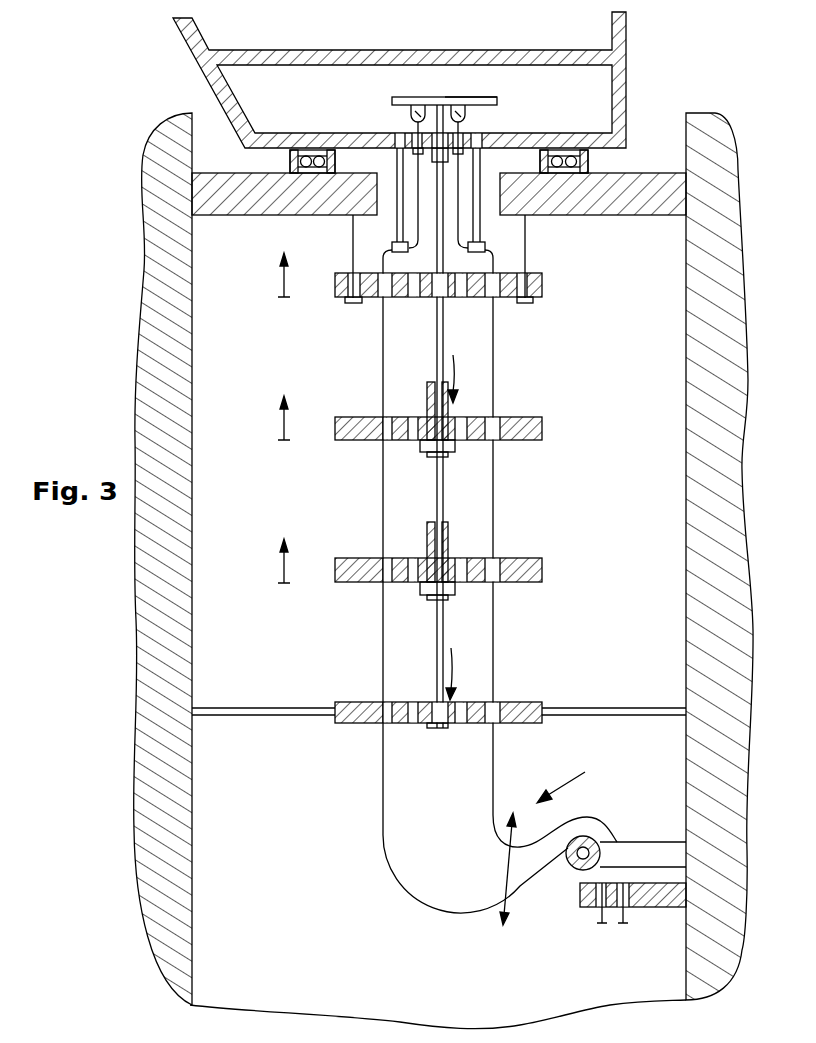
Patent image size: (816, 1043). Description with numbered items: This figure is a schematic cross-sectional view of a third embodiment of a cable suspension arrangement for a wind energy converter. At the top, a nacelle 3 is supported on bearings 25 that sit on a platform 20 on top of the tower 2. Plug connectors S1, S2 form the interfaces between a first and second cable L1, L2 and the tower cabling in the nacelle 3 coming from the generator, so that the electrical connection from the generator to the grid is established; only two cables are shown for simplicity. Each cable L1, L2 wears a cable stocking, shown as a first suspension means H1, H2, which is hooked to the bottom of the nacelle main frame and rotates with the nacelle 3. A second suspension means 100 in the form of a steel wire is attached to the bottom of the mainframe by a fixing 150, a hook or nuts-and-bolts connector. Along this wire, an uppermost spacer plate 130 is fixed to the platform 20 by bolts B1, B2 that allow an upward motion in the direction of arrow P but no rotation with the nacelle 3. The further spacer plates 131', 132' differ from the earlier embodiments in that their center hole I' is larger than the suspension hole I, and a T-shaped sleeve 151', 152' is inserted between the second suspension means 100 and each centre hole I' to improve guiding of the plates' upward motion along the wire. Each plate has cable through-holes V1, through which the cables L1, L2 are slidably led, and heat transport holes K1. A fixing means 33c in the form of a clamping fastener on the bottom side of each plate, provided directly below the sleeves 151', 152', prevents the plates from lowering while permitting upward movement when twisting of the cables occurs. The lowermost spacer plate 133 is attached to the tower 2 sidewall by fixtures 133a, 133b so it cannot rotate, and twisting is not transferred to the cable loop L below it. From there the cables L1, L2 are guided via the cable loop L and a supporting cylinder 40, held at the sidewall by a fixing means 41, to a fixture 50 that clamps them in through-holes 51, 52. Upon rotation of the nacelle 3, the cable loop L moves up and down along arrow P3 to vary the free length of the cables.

The tower 2 is at (705, 140).
The nacelle 3 is at (622, 72).
The platform 20 is at (673, 182).
The bearings 25 is at (290, 161).
The fixing 150 is at (436, 130).
The plug connector S1 is at (396, 97).
The plug connector S2 is at (492, 97).
The first cable L1 is at (412, 127).
The second cable L2 is at (464, 127).
The cable stocking arrangement H1 is at (397, 200).
The cable stocking arrangement H2 is at (479, 200).
The second suspension means 100 is at (448, 495).
The uppermost spacer plate 130 is at (542, 288).
The bolt B1 is at (353, 242).
The bolt B2 is at (525, 242).
The arrow P is at (282, 286).
The spacer plate 131' is at (472, 429).
The T-shaped sleeve 151' is at (392, 434).
The cable through-holes V1 is at (383, 418).
The heat transport holes K1 is at (410, 418).
The center hole I' is at (454, 365).
The spacer plate 132' is at (472, 570).
The T-shaped sleeve 152' is at (392, 557).
The lowermost spacer plate 133 is at (542, 708).
The fixture 133a is at (258, 708).
The fixture 133b is at (652, 708).
The central suspension hole I is at (451, 659).
The fixing means 33c is at (432, 300).
The cable loop L is at (563, 772).
The arrow P3 is at (507, 866).
The supporting cylinder 40 is at (574, 867).
The fixing means 41 is at (654, 856).
The fixture 50 is at (666, 898).
The through-hole 51 is at (598, 910).
The through-hole 52 is at (622, 912).